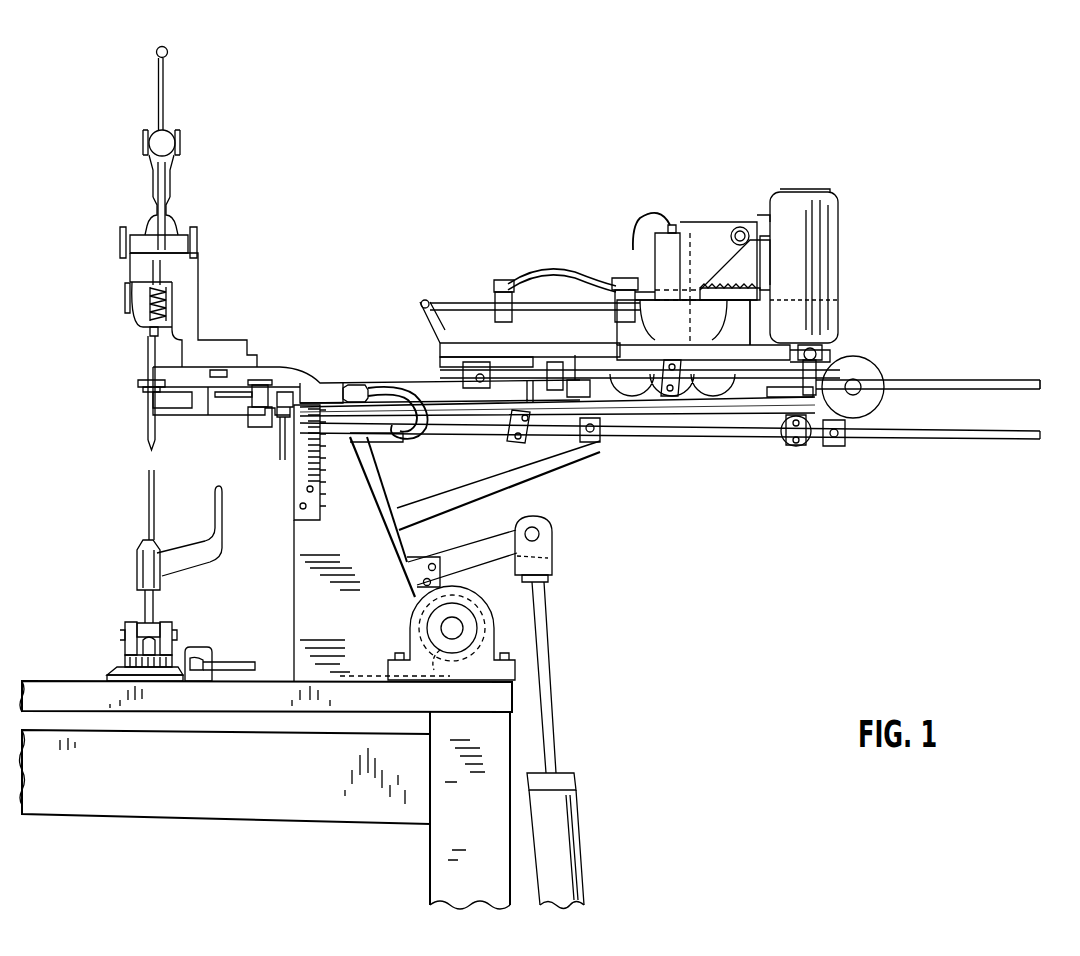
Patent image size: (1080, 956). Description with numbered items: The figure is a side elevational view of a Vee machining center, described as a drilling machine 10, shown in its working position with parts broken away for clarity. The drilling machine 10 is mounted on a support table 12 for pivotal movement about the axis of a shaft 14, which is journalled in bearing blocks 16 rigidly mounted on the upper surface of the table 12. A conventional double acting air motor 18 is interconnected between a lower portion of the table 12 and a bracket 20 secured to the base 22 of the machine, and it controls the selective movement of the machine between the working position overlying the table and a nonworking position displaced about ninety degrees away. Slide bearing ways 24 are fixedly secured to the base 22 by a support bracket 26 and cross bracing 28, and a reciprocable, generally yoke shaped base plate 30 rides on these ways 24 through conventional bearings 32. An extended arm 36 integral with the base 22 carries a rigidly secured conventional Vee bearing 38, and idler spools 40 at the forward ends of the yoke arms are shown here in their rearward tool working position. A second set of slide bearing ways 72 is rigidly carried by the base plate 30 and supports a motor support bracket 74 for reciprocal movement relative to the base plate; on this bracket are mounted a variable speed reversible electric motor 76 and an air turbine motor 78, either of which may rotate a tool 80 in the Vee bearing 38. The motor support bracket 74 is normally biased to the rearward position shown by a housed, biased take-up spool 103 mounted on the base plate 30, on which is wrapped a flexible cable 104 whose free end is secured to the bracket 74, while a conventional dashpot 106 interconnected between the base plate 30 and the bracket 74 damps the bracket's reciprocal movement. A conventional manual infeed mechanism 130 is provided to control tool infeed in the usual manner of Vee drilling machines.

The drilling machine 10 is at (372, 220).
The support table 12 is at (442, 848).
The shaft 14 is at (441, 628).
The bearing blocks 16 is at (489, 650).
The double acting air motor 18 is at (570, 829).
The bracket 20 is at (474, 544).
The base 22 is at (360, 542).
The slide bearing ways 24 is at (702, 434).
The support bracket 26 is at (512, 468).
The cross bracing 28 is at (584, 444).
The base plate 30 is at (654, 405).
The bearings 32 is at (795, 450).
The extended arm 36 is at (283, 373).
The Vee bearing 38 is at (184, 414).
The idler spools 40 is at (253, 398).
The slide bearing ways 72 is at (944, 380).
The motor support bracket 74 is at (620, 348).
The variable speed reversible electric motor 76 is at (840, 264).
The air turbine motor 78 is at (654, 262).
The tool 80 is at (142, 405).
The take-up spool 103 is at (862, 360).
The flexible cable 104 is at (742, 339).
The dashpot 106 is at (479, 296).
The manual infeed mechanism 130 is at (194, 208).